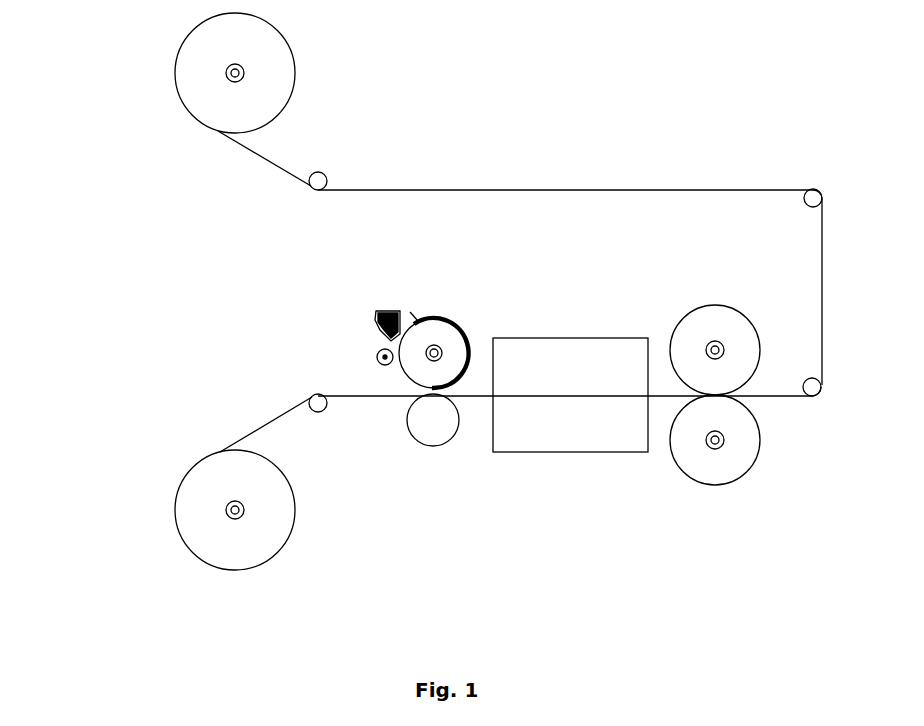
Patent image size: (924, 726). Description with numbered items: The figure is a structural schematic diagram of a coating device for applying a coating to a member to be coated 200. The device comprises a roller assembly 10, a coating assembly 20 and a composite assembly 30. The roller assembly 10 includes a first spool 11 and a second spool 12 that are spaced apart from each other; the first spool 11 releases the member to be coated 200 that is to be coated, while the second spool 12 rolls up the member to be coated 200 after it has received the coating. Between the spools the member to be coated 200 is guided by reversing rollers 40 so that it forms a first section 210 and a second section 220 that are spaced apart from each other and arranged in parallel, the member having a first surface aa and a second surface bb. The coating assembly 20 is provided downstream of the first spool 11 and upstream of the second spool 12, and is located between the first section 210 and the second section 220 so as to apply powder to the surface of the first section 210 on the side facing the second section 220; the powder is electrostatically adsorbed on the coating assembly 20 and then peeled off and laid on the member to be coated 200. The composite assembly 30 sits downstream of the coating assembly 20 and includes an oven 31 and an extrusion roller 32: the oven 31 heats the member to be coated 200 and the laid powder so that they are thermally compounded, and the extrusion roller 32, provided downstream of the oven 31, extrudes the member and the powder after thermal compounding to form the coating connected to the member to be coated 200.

The roller assembly 10 is at (72, 208).
The first spool 11 is at (202, 485).
The second spool 12 is at (214, 92).
The coating assembly 20 is at (442, 455).
The composite assembly 30 is at (742, 593).
The oven 31 is at (618, 465).
The extrusion roller 32 is at (725, 491).
The reversing roller 40 is at (327, 172).
The member to be coated 200 is at (612, 188).
The first section 210 is at (780, 398).
The second section 220 is at (687, 188).
The first surface aa is at (557, 194).
The second surface bb is at (491, 186).